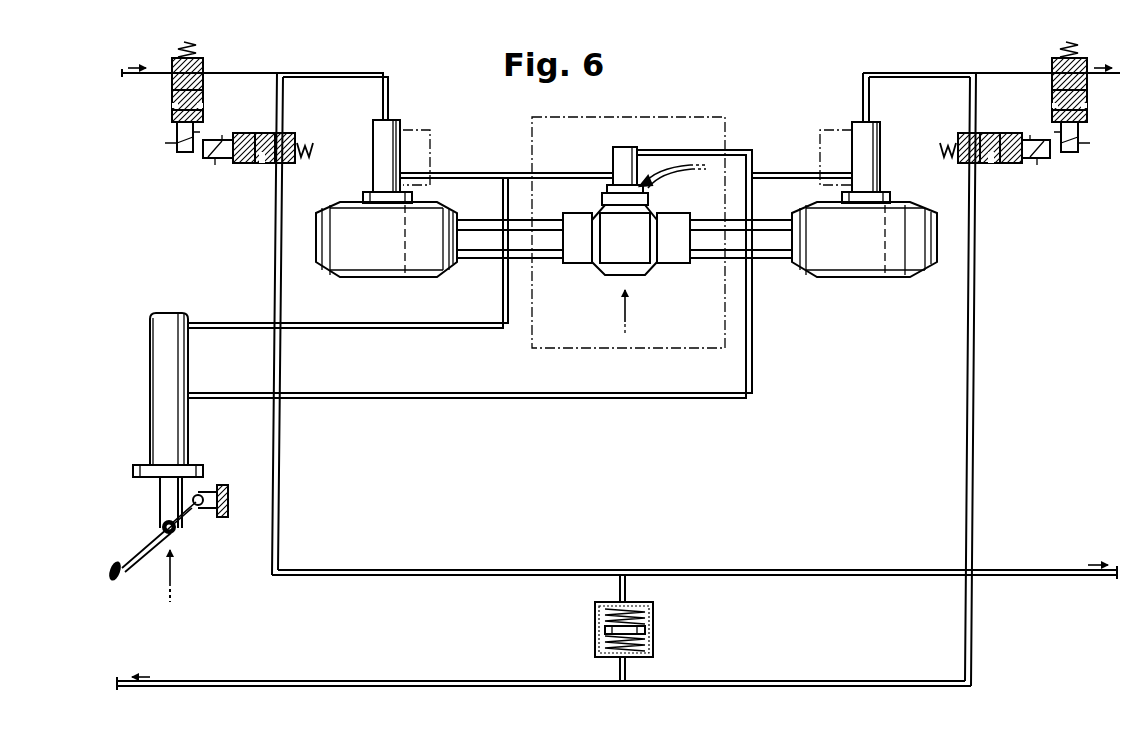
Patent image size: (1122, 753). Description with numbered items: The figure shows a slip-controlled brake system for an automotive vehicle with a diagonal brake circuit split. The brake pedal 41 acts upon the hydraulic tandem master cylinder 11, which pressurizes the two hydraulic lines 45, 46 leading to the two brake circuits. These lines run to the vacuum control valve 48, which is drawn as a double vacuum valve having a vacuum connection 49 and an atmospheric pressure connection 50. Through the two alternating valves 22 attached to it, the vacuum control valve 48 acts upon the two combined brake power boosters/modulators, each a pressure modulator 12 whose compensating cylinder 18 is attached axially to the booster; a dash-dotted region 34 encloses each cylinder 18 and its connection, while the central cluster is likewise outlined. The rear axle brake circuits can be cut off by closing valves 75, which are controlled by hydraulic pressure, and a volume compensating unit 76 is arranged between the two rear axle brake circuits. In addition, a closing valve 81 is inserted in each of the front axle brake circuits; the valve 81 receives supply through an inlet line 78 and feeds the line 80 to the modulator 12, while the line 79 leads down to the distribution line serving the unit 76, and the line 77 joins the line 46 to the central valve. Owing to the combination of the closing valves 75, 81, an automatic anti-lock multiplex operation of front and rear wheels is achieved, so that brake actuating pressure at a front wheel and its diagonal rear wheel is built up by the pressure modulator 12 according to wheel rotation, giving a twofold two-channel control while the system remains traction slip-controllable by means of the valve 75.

The tandem master cylinder 11 is at (158, 333).
The pressure modulator 12 is at (405, 279).
The compensating cylinder 18 is at (385, 140).
The alternating valve 22 is at (576, 260).
The control unit 34 is at (430, 138).
The brake pedal 41 is at (138, 555).
The hydraulic line 45 is at (218, 399).
The hydraulic line 46 is at (218, 330).
The vacuum control valve 48 is at (615, 258).
The vacuum connection 49 is at (632, 279).
The atmospheric pressure connection 50 is at (641, 180).
The closing valve 75 is at (258, 165).
The volume compensating unit 76 is at (655, 617).
The line 77 is at (431, 329).
The inlet line 78 is at (148, 78).
The line 79 is at (277, 302).
The line 80 is at (384, 73).
The closing valve 81 is at (203, 95).